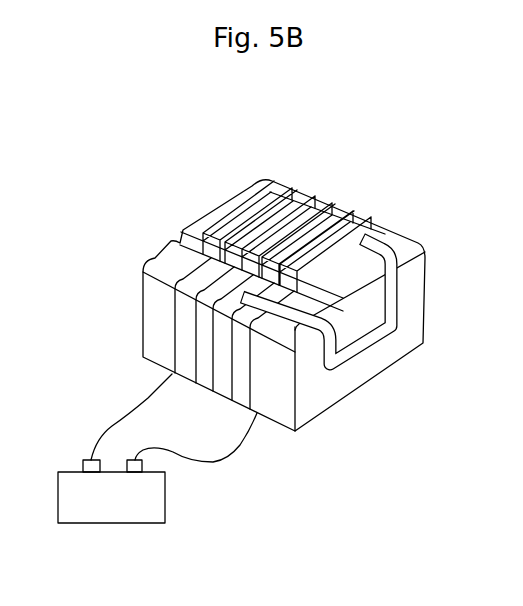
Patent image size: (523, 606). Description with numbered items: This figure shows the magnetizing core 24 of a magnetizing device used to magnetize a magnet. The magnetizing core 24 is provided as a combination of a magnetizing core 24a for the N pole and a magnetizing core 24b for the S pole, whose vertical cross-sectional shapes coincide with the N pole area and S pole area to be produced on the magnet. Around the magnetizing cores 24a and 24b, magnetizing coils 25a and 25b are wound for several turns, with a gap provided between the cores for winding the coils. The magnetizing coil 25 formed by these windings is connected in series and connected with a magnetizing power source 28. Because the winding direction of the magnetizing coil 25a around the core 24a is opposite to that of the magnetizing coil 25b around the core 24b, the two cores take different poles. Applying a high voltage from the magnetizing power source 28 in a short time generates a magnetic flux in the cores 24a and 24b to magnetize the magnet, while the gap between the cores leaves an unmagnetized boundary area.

The magnetizing core 24 is at (326, 192).
The magnetizing core for the N pole 24a is at (208, 223).
The magnetizing core for the S pole 24b is at (158, 257).
The magnetizing coil 25 is at (225, 463).
The magnetizing coil 25a is at (247, 229).
The magnetizing coil 25b is at (175, 308).
The magnetizing power source 28 is at (125, 523).